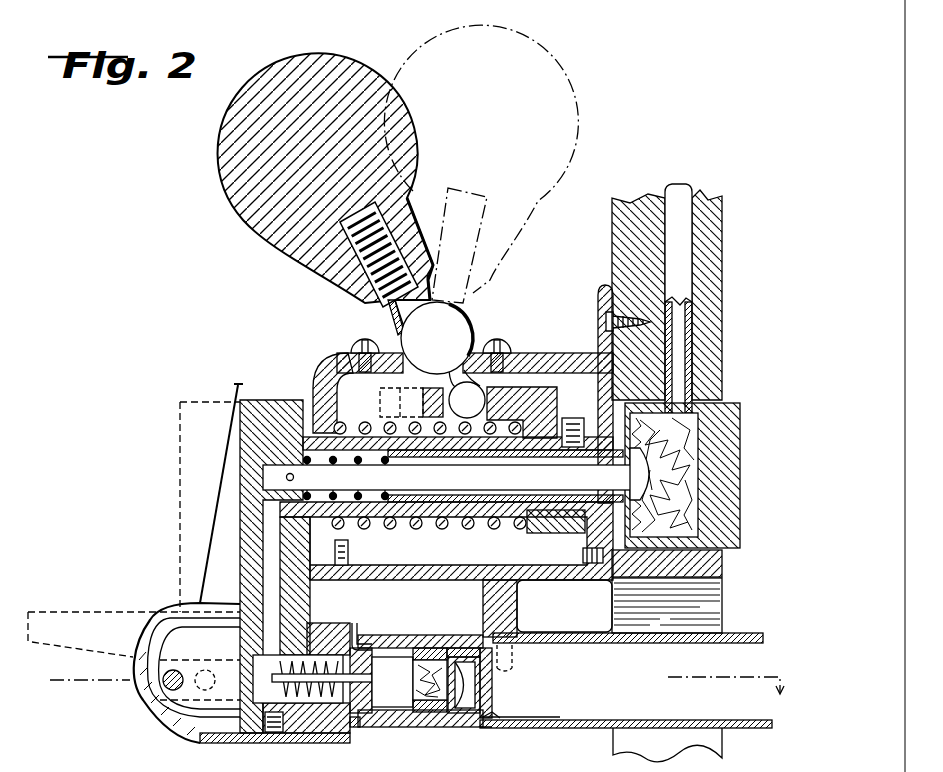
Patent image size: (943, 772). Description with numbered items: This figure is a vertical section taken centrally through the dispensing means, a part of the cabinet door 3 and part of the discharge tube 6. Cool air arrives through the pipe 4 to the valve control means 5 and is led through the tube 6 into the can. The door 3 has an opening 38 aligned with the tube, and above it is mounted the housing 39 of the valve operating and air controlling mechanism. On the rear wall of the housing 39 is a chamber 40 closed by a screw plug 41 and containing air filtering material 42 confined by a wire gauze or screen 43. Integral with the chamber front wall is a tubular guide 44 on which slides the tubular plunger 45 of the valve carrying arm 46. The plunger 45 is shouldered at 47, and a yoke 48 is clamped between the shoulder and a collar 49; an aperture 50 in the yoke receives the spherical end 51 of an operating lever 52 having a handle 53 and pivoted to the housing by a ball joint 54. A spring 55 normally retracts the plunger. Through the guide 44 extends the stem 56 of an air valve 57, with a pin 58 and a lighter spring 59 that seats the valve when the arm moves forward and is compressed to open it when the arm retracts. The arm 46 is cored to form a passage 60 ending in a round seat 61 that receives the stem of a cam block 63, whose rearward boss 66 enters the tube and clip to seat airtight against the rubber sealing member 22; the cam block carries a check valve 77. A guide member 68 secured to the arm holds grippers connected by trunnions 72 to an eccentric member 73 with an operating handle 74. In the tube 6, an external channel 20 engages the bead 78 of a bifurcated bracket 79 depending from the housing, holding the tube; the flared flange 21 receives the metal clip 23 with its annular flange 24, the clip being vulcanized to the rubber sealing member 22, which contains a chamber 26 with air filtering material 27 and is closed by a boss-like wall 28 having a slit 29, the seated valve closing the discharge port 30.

The door 3 is at (705, 222).
The pipe 4 is at (684, 190).
The valve control means 5 is at (333, 365).
The discharge tube 6 is at (683, 720).
The external channel 20 is at (488, 729).
The flange 21 is at (372, 738).
The rubber sealing member 22 is at (450, 636).
The metal clip 23 is at (388, 638).
The annular flange 24 is at (353, 633).
The chamber 26 is at (428, 636).
The air filtering material 27 is at (420, 675).
The boss-like wall 28 is at (473, 697).
The slit 29 is at (485, 690).
The discharge port 30 is at (440, 727).
The opening 38 is at (703, 603).
The housing 39 is at (545, 355).
The chamber 40 is at (668, 375).
The screw plug 41 is at (740, 410).
The air filtering material 42 is at (667, 493).
The wire gauze or screen 43 is at (647, 513).
The tubular guide 44 is at (557, 410).
The tubular plunger 45 is at (336, 385).
The valve carrying arm 46 is at (243, 528).
The shoulder 47 is at (531, 532).
The yoke 48 is at (524, 352).
The collar 49 is at (573, 532).
The aperture 50 is at (383, 400).
The spherical end 51 is at (467, 394).
The operating lever 52 is at (367, 302).
The handle 53 is at (258, 178).
The ball joint 54 is at (430, 337).
The spring 55 is at (442, 528).
The stem 56 is at (447, 476).
The air valve 57 is at (632, 471).
The pin 58 is at (290, 474).
The spring 59 is at (330, 466).
The passage 60 is at (280, 555).
The round seat 61 is at (295, 650).
The cam block 63 is at (316, 744).
The boss 66 is at (377, 710).
The guide member 68 is at (148, 708).
The trunnions 72 is at (175, 670).
The eccentric member 73 is at (187, 711).
The operating handle 74 is at (237, 384).
The check valve 77 is at (282, 676).
The bead 78 is at (505, 661).
The bifurcated bracket 79 is at (504, 604).